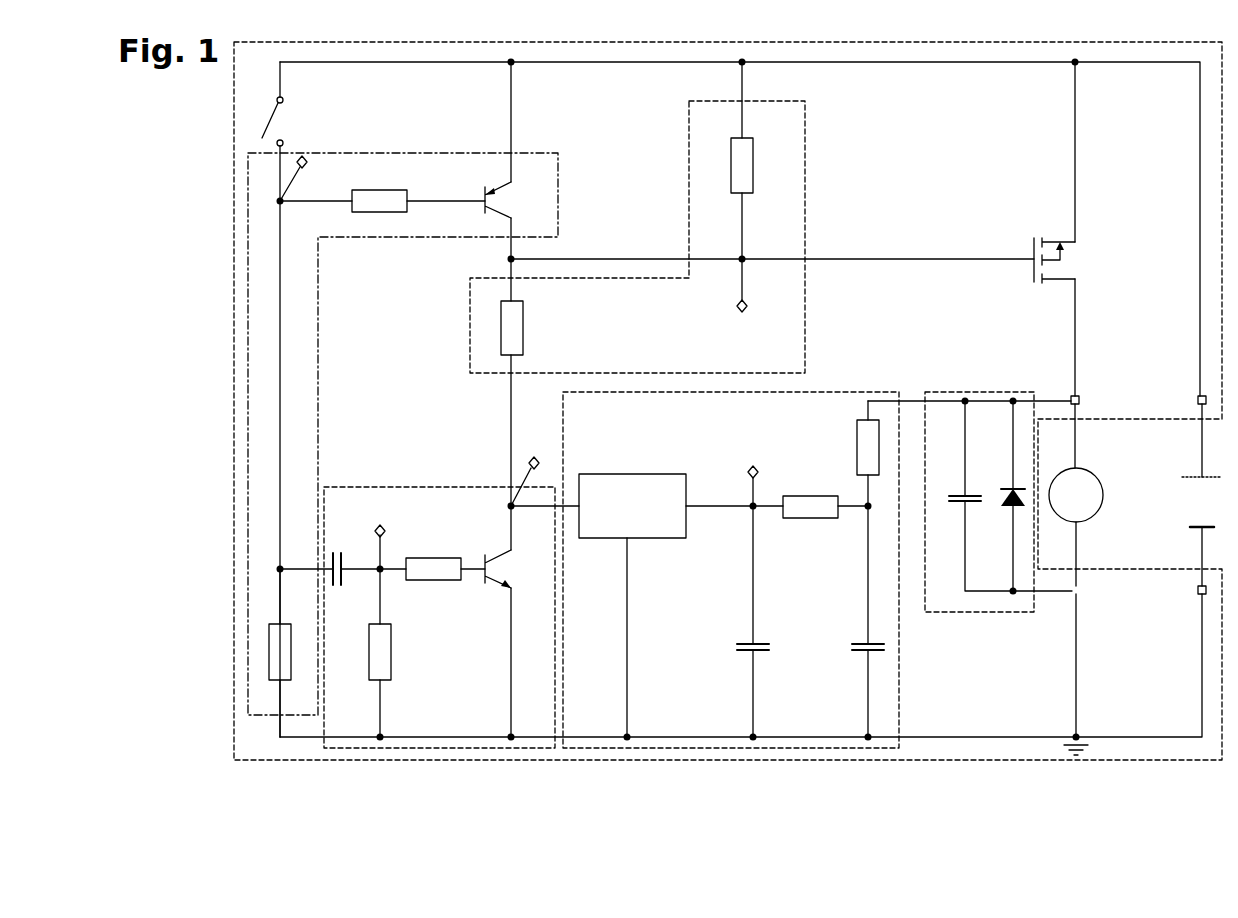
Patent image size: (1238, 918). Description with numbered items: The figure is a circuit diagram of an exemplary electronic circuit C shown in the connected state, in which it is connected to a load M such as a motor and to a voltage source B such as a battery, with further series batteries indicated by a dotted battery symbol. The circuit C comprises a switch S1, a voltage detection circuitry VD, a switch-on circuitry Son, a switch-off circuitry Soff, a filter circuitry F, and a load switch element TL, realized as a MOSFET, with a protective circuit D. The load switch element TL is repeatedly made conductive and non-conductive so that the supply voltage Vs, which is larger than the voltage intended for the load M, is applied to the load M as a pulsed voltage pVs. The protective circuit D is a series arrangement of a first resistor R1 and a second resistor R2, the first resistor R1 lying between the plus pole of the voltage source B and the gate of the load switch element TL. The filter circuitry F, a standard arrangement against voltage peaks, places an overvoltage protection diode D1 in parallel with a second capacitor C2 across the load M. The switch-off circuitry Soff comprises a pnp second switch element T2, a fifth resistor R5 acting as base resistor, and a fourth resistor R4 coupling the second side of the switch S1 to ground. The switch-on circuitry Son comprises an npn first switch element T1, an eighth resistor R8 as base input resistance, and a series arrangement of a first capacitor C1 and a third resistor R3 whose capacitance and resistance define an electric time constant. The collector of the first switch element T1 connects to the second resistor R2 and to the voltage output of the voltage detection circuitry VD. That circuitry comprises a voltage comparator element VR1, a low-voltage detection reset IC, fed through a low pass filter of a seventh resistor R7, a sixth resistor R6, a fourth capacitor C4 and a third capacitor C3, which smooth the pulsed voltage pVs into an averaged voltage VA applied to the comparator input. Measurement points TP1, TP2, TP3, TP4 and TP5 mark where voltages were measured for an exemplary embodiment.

The electronic circuit C is at (543, 40).
The switch S1 is at (277, 115).
The switch-off circuitry Soff is at (458, 151).
The switch-on circuitry Son is at (440, 486).
The protective circuit D is at (686, 155).
The voltage detection circuitry VD is at (862, 390).
The filter circuitry F is at (1019, 389).
The measurement point TP1 is at (383, 520).
The measurement point TP2 is at (534, 472).
The measurement point TP3 is at (755, 475).
The measurement point TP4 is at (744, 319).
The measurement point TP5 is at (304, 170).
The first resistor R1 is at (772, 148).
The second resistor R2 is at (524, 308).
The third resistor R3 is at (392, 672).
The fourth resistor R4 is at (296, 654).
The fifth resistor R5 is at (400, 190).
The sixth resistor R6 is at (835, 518).
The seventh resistor R7 is at (855, 464).
The eighth resistor R8 is at (456, 558).
The first switch element T1 is at (500, 568).
The second switch element T2 is at (500, 199).
The load switch element TL is at (1066, 259).
The first capacitor C1 is at (358, 558).
The second capacitor C2 is at (955, 490).
The third capacitor C3 is at (740, 650).
The fourth capacitor C4 is at (853, 652).
The overvoltage protection diode D1 is at (1000, 490).
The voltage comparator element VR1 is at (667, 472).
The averaged voltage VA is at (710, 495).
The pulsed voltage pVs is at (1095, 389).
The supply voltage Vs is at (1190, 388).
The load M is at (1076, 495).
The voltage source B is at (1196, 523).